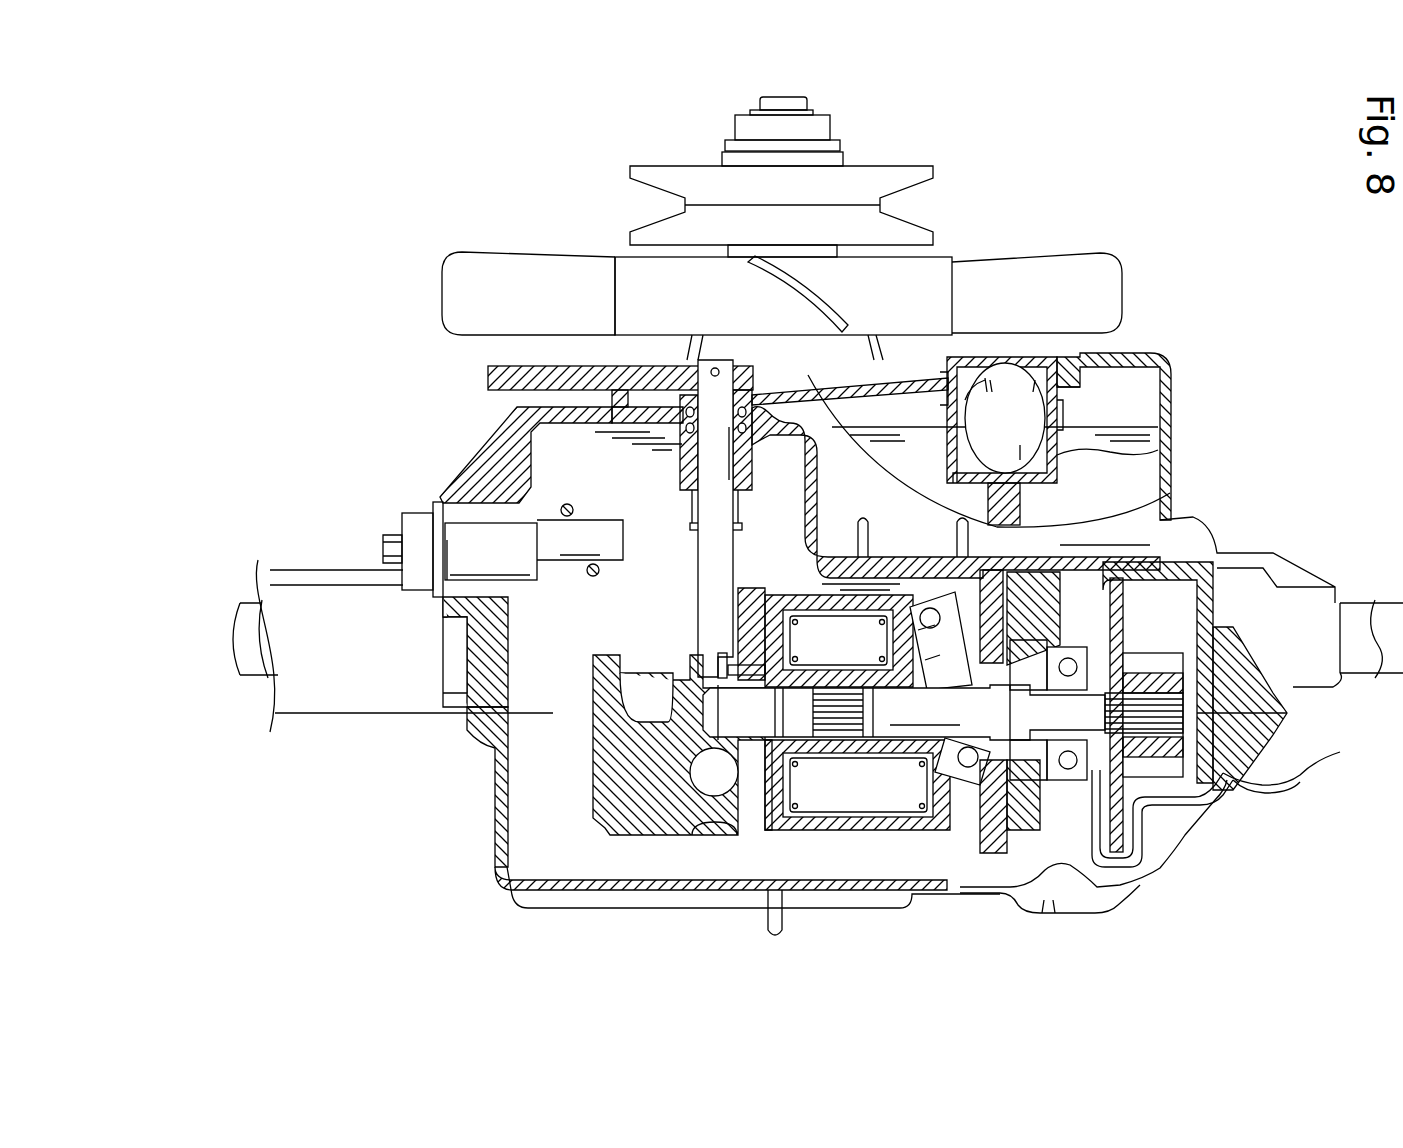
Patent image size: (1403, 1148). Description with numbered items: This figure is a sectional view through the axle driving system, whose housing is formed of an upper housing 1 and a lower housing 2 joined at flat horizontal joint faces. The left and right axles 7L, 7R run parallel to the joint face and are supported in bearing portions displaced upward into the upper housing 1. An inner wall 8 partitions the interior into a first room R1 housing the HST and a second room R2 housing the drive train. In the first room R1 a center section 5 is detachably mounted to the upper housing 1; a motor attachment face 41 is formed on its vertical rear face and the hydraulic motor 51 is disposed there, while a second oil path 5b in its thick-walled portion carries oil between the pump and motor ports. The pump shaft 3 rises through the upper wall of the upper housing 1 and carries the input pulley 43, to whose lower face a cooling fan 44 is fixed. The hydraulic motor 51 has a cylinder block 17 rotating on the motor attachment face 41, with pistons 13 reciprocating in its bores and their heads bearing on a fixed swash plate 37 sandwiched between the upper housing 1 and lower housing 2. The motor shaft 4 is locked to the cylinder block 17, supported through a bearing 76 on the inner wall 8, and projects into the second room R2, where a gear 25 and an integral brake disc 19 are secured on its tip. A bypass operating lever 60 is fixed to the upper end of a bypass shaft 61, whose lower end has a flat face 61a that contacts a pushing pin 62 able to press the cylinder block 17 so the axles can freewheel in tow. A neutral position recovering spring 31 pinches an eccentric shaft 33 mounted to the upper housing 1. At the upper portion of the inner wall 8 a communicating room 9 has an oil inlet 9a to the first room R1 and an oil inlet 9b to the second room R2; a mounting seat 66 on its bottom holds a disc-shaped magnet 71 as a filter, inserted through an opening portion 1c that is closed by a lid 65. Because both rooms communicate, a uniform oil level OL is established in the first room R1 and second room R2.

The upper housing 1 is at (1210, 537).
The opening portion 1c is at (1070, 365).
The lower housing 2 is at (1247, 787).
The pump shaft 3 is at (810, 97).
The motor shaft 4 is at (1078, 733).
The center section 5 is at (593, 788).
The second oil path 5b is at (700, 780).
The left axle 7L is at (250, 608).
The right axle 7R is at (1355, 612).
The inner wall 8 is at (1020, 503).
The communicating room 9 is at (1043, 352).
The oil inlet 9a is at (950, 412).
The oil inlet 9b is at (1050, 420).
The pistons 13 is at (900, 607).
The cylinder block 17 is at (807, 830).
The brake disc 19 is at (1122, 838).
The gear 25 is at (1165, 660).
The neutral position recovering spring 31 is at (567, 504).
The eccentric shaft 33 is at (498, 563).
The fixed swash plate 37 is at (963, 780).
The motor attachment face 41 is at (770, 838).
The input pulley 43 is at (920, 166).
The cooling fan 44 is at (962, 262).
The hydraulic motor 51 is at (848, 858).
The bypass operating lever 60 is at (488, 380).
The bypass shaft 61 is at (697, 560).
The flat face 61a is at (718, 665).
The pushing pin 62 is at (740, 665).
The lid 65 is at (1030, 372).
The mounting seat 66 is at (1063, 452).
The magnet 71 is at (1003, 380).
The bearing 76 is at (1027, 660).
The oil level OL is at (1140, 427).
The first room R1 is at (925, 486).
The second room R2 is at (1106, 515).